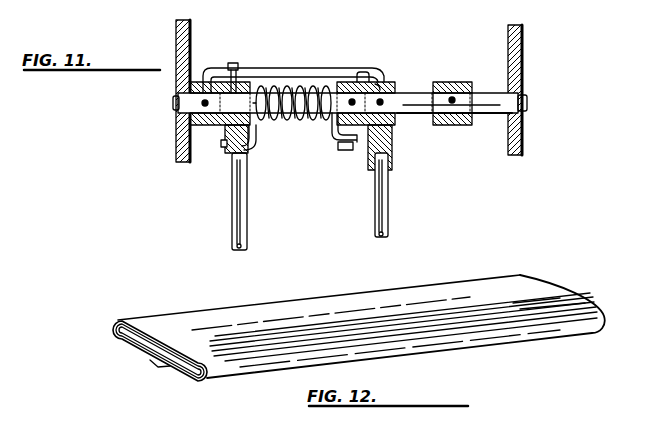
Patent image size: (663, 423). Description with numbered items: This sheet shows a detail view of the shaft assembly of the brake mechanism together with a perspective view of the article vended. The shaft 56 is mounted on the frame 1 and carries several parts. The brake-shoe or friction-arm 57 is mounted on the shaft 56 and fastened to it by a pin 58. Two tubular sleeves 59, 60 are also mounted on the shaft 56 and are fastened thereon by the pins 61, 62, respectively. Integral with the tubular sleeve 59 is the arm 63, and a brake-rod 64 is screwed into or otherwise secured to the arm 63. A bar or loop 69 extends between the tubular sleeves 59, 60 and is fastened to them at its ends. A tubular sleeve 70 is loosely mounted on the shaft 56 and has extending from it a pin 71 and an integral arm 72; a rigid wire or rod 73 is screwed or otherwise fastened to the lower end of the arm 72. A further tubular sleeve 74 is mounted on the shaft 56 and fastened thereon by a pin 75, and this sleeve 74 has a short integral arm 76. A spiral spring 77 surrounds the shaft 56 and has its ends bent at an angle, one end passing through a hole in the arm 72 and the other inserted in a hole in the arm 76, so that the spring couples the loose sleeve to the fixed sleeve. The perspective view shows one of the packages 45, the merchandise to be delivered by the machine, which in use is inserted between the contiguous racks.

In FIG. 11, the frame 1 is at (176, 156).
In FIG. 11, the shaft 56 is at (494, 114).
In FIG. 11, the brake-shoe or friction-arm 57 is at (455, 82).
In FIG. 11, the pin 58 is at (455, 100).
In FIG. 11, the tubular sleeve 59 is at (388, 77).
In FIG. 11, the tubular sleeve 60 is at (202, 130).
In FIG. 11, the pin 61 is at (384, 100).
In FIG. 11, the pin 62 is at (188, 114).
In FIG. 11, the arm 63 is at (393, 140).
In FIG. 11, the brake-rod 64 is at (393, 195).
In FIG. 11, the bar or loop 69 is at (318, 58).
In FIG. 11, the tubular sleeve 70 is at (249, 82).
In FIG. 11, the pin 71 is at (231, 63).
In FIG. 11, the arm 72 is at (249, 158).
In FIG. 11, the rigid wire or rod 73 is at (251, 201).
In FIG. 11, the tubular sleeve 74 is at (352, 99).
In FIG. 11, the pin 75 is at (362, 80).
In FIG. 11, the short integral arm 76 is at (344, 150).
In FIG. 11, the spiral spring 77 is at (292, 116).
In FIG. 12, the packages 45 is at (359, 328).